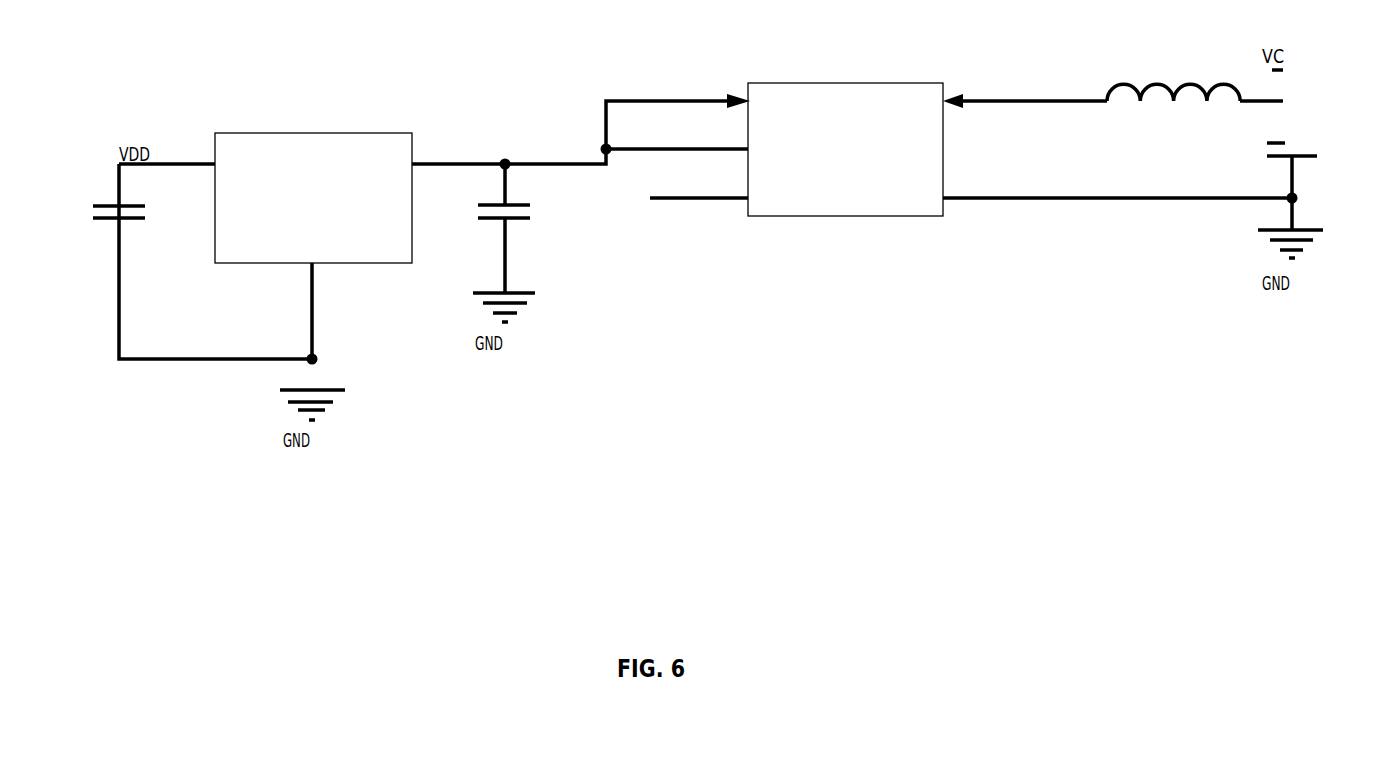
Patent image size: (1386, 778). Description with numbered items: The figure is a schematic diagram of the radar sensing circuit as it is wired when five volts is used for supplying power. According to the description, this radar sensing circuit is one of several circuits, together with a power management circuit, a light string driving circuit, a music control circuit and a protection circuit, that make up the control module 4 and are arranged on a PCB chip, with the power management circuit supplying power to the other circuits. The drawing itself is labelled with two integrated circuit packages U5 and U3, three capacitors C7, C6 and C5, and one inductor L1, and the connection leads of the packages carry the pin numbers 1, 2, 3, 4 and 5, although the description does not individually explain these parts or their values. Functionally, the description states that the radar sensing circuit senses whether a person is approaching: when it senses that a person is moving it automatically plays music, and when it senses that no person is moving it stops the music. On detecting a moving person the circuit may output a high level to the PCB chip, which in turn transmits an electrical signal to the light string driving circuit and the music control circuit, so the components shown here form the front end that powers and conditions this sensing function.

The voltage regulator / boost chip HT44 U5 is at (313, 250).
The DC-DC converter chip QX2329L50F U3 is at (845, 150).
The capacitor 10uF/10V C7 is at (145, 245).
The capacitor 22uF/10V C6 is at (531, 243).
The capacitor 1uF/10V C5 is at (1340, 152).
The inductor 10uH L1 is at (1173, 116).
The pin 1 (EN) connection 1 is at (678, 112).
The pin 2 connection 2 is at (433, 146).
The pin 3 connection 3 is at (580, 167).
The control module 4 is at (1117, 184).
The pin 5 (SW) connection 5 is at (1025, 91).